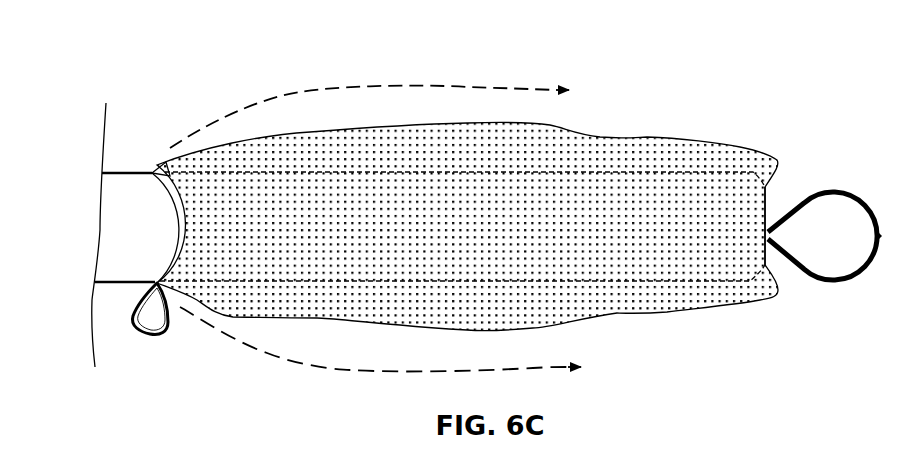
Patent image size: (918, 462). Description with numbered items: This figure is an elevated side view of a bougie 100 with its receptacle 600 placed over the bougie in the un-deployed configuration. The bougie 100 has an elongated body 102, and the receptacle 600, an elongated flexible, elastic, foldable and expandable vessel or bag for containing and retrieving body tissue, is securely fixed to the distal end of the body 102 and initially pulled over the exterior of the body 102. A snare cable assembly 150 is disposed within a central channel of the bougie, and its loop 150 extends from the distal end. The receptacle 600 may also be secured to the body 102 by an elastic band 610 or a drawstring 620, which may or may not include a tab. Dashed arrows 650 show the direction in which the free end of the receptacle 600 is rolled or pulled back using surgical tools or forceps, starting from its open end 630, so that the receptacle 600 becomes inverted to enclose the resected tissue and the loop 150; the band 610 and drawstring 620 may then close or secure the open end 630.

The bougie 100 is at (728, 111).
The body 102 is at (672, 255).
The snare cable assembly 150 is at (830, 283).
The receptacle 600 is at (612, 148).
The elastic band 610 is at (167, 163).
The drawstring 620 is at (163, 335).
The open end 630 is at (166, 226).
The arrows 650 is at (452, 88).